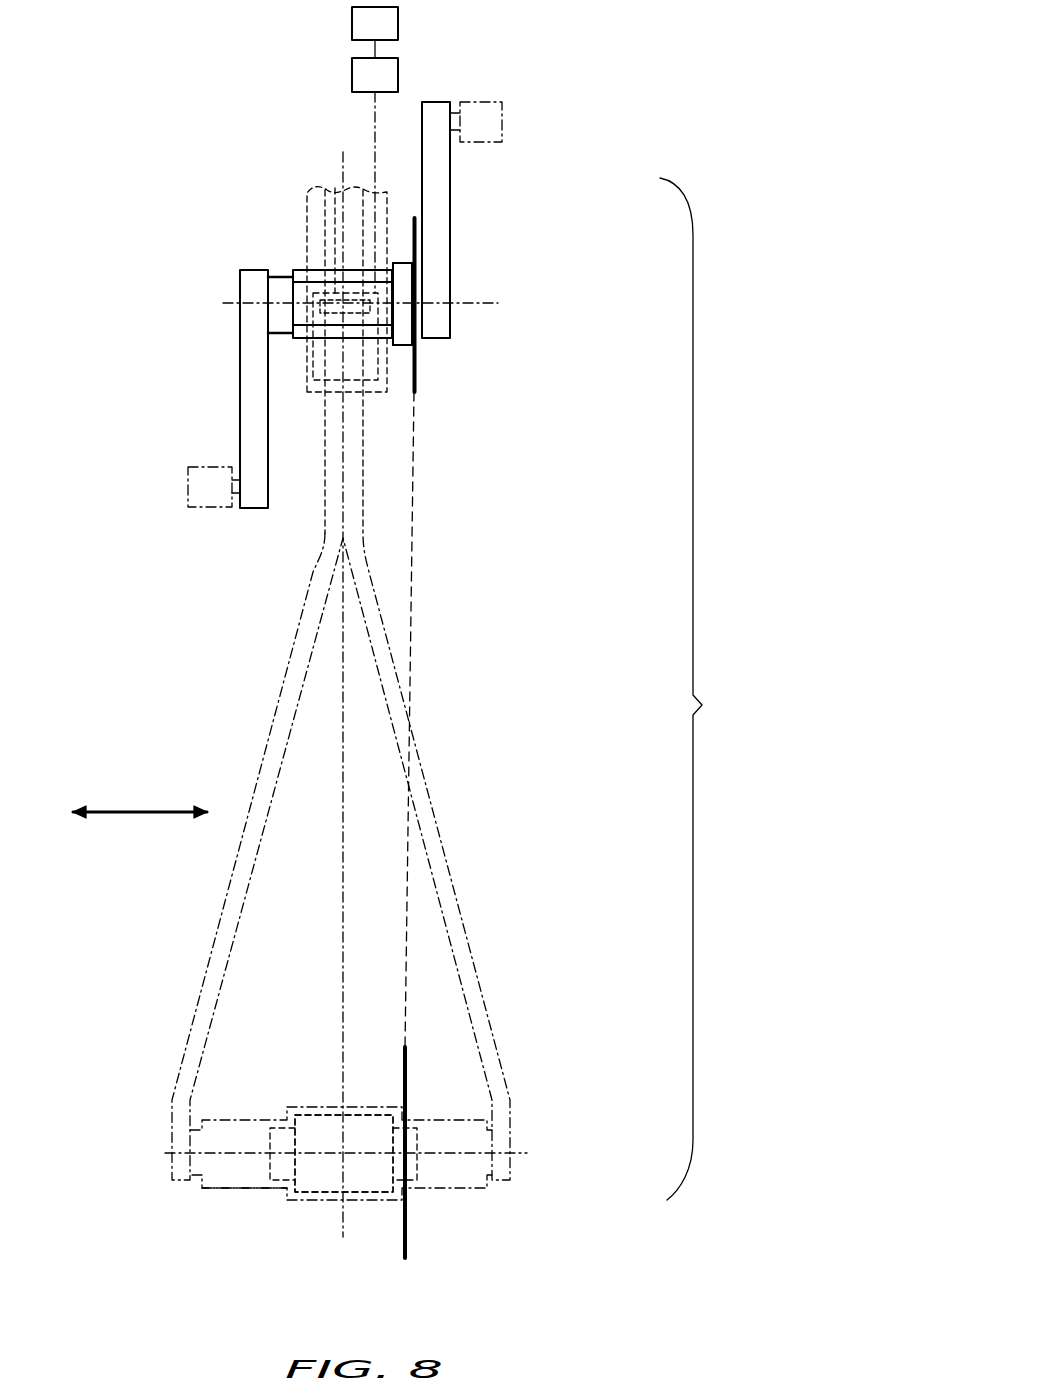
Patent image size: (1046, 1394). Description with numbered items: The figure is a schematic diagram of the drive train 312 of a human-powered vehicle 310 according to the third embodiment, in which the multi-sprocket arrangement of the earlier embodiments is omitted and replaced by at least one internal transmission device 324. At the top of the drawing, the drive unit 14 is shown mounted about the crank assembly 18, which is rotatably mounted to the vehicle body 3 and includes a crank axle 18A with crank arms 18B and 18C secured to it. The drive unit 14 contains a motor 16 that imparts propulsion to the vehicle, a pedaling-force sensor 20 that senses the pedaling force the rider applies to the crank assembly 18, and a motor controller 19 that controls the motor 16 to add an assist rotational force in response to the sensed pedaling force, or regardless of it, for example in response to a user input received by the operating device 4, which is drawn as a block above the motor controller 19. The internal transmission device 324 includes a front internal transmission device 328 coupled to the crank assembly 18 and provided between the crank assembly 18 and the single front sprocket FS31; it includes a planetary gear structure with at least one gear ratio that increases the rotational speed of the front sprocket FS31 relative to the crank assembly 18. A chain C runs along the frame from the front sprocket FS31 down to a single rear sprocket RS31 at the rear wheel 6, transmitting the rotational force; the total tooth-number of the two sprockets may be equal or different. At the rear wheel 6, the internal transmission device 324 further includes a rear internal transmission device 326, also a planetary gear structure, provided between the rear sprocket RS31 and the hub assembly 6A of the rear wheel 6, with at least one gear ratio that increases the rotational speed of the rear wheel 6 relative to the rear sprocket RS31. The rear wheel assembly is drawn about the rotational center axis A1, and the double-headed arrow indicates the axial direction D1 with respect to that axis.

The operating device 4 is at (384, 36).
The motor controller 19 is at (390, 88).
The human-powered vehicle 310 is at (612, 132).
The drive unit 14 is at (305, 192).
The pedaling-force sensor 20 is at (335, 188).
The motor 16 is at (310, 370).
The crank assembly 18 is at (200, 243).
The crank axle 18A is at (293, 268).
The crank arm 18B is at (453, 218).
The crank arm 18C is at (240, 385).
The front internal transmission device 328 is at (412, 346).
The internal transmission device 324 is at (420, 727).
The front sprocket FS31 is at (417, 372).
The chain C is at (412, 578).
The rear sprocket RS31 is at (407, 1212).
The vehicle body 3 is at (293, 627).
The hub assembly 6A is at (213, 1190).
The rear wheel 6 is at (250, 1190).
The rear internal transmission device 326 is at (317, 1113).
The rotational center axis A1 is at (520, 1153).
The axial direction D1 is at (142, 810).
The drive train 312 is at (706, 689).